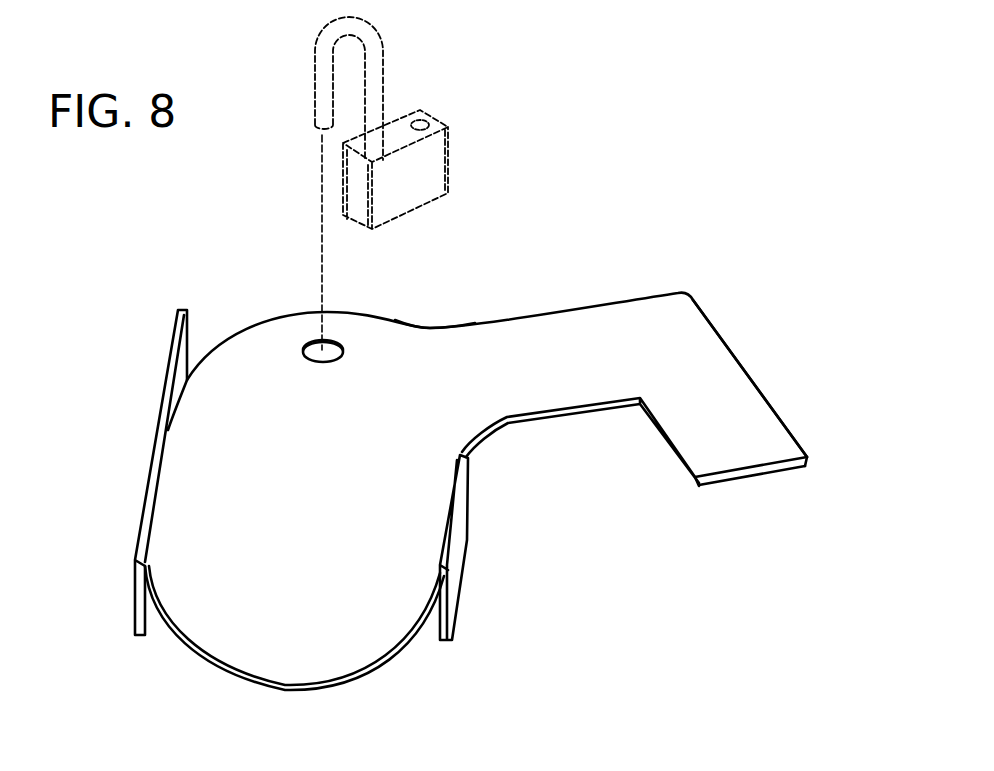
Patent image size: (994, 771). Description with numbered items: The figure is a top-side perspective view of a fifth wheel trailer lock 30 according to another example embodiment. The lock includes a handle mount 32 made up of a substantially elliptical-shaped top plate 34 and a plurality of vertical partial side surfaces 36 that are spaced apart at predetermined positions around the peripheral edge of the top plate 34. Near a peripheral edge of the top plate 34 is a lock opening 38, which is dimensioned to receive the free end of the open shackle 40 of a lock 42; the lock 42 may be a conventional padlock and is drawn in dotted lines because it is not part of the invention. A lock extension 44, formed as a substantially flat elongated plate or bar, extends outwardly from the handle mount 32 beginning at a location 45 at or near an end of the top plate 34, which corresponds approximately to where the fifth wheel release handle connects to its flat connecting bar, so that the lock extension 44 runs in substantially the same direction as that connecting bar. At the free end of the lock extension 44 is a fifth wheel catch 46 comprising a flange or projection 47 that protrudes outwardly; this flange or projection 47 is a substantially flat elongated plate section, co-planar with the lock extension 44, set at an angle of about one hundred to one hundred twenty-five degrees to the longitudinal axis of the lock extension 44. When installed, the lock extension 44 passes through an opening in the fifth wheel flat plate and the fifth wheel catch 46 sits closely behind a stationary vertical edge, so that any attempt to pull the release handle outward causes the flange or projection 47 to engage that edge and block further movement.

The fifth wheel trailer lock 30 is at (143, 304).
The handle mount 32 is at (208, 658).
The top plate 34 is at (270, 672).
The vertical partial side surfaces 36 is at (170, 350).
The lock opening 38 is at (316, 345).
The open shackle 40 is at (323, 58).
The lock 42 is at (425, 163).
The lock extension 44 is at (507, 317).
The location 45 is at (430, 328).
The fifth wheel catch 46 is at (718, 327).
The flange or projection 47 is at (777, 413).